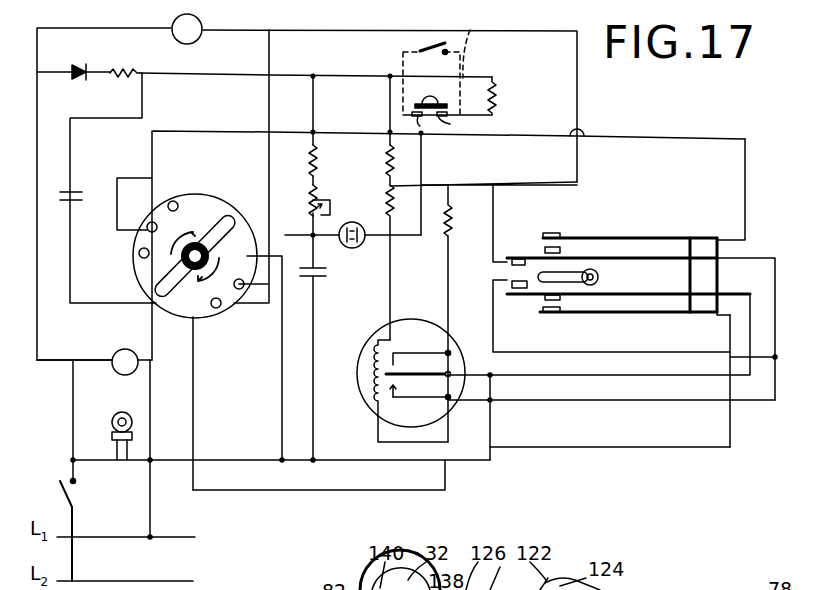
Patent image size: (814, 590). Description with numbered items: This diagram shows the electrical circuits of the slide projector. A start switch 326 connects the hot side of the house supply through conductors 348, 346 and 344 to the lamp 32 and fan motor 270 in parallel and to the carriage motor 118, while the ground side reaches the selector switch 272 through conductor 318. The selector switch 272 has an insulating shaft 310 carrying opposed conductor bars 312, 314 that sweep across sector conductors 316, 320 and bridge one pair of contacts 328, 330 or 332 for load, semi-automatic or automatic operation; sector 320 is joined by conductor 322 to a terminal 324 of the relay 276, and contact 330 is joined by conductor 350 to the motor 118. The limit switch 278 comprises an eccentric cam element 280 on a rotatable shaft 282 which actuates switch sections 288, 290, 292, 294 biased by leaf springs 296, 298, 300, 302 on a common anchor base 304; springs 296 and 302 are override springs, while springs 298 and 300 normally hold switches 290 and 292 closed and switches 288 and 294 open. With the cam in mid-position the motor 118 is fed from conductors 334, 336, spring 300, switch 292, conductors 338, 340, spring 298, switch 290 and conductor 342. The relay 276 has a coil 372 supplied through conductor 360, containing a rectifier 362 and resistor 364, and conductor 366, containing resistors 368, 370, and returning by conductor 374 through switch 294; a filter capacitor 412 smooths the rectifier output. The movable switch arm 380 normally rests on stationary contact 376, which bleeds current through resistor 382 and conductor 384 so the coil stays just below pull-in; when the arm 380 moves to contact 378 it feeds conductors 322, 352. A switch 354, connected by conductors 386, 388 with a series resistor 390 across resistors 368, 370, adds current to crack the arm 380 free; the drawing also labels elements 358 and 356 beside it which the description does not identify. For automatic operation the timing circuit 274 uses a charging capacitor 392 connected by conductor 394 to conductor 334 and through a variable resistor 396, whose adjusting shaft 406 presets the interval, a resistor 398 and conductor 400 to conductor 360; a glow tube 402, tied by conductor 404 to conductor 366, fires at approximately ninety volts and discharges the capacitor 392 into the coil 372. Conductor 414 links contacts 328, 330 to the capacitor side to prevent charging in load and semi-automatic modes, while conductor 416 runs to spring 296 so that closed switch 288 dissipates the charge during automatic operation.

The conductor 344 is at (76, 28).
The motor 118 is at (204, 24).
The conductor 342 is at (342, 30).
The conductor 350 is at (270, 74).
The conductor 360 is at (62, 68).
The rectifier 362 is at (76, 80).
The resistor 364 is at (125, 80).
The conductor 346 is at (34, 214).
The filter capacitor 412 is at (74, 188).
The conductor 414 is at (200, 130).
The selector switch 272 is at (206, 182).
The conductor bar 314 is at (228, 224).
The sector conductor 316 is at (214, 204).
The sector conductor 320 is at (222, 266).
The insulating shaft 310 is at (190, 295).
The contacts 332 is at (176, 200).
The contacts 330 is at (140, 250).
The contacts 328 is at (156, 292).
The conductor bar 312 is at (170, 306).
The fan motor 270 is at (126, 349).
The conductor 348 is at (72, 400).
The lamp 32 is at (122, 412).
The conductor 318 is at (150, 432).
The start switch 326 is at (58, 486).
The conductor 334 is at (230, 462).
The conductor 322 is at (258, 492).
The charging capacitor 392 is at (303, 290).
The conductor 394 is at (308, 322).
The timer circuit 274 is at (288, 266).
The conductor 366 is at (388, 102).
The conductor 400 is at (318, 106).
The resistor 398 is at (320, 164).
The variable resistor 396 is at (316, 196).
The adjusting shaft 406 is at (331, 208).
The resistor 368 is at (386, 166).
The resistor 370 is at (384, 200).
The conductor 404 is at (366, 240).
The glow tube 402 is at (354, 248).
The conductor 386 is at (424, 166).
The resistor 382 is at (452, 220).
The conductor 384 is at (450, 266).
The switch 358 is at (426, 44).
The switch actuator 356 is at (488, 39).
The conductor 388 is at (480, 76).
The resistor 390 is at (494, 80).
The switch 354 is at (450, 115).
The relay 276 is at (366, 410).
The relay coil 372 is at (368, 372).
The switch arm 380 is at (408, 372).
The stationary contact 376 is at (400, 349).
The stationary contact 378 is at (398, 400).
The terminal 324 is at (446, 398).
The conductor 416 is at (606, 138).
The switch section 288 is at (543, 232).
The switch section 290 is at (515, 256).
The limit switch 278 is at (572, 228).
The leaf spring 298 is at (655, 240).
The leaf spring 296 is at (692, 240).
The switch element 280 is at (578, 272).
The rotatable shaft 282 is at (598, 282).
The switch section 292 is at (512, 300).
The switch section 294 is at (547, 314).
The leaf spring 302 is at (676, 314).
The leaf spring 300 is at (698, 316).
The common anchor base 304 is at (720, 274).
The conductor 340 is at (775, 258).
The conductor 338 is at (550, 356).
The conductor 336 is at (532, 402).
The conductor 352 is at (616, 402).
The conductor 374 is at (566, 448).